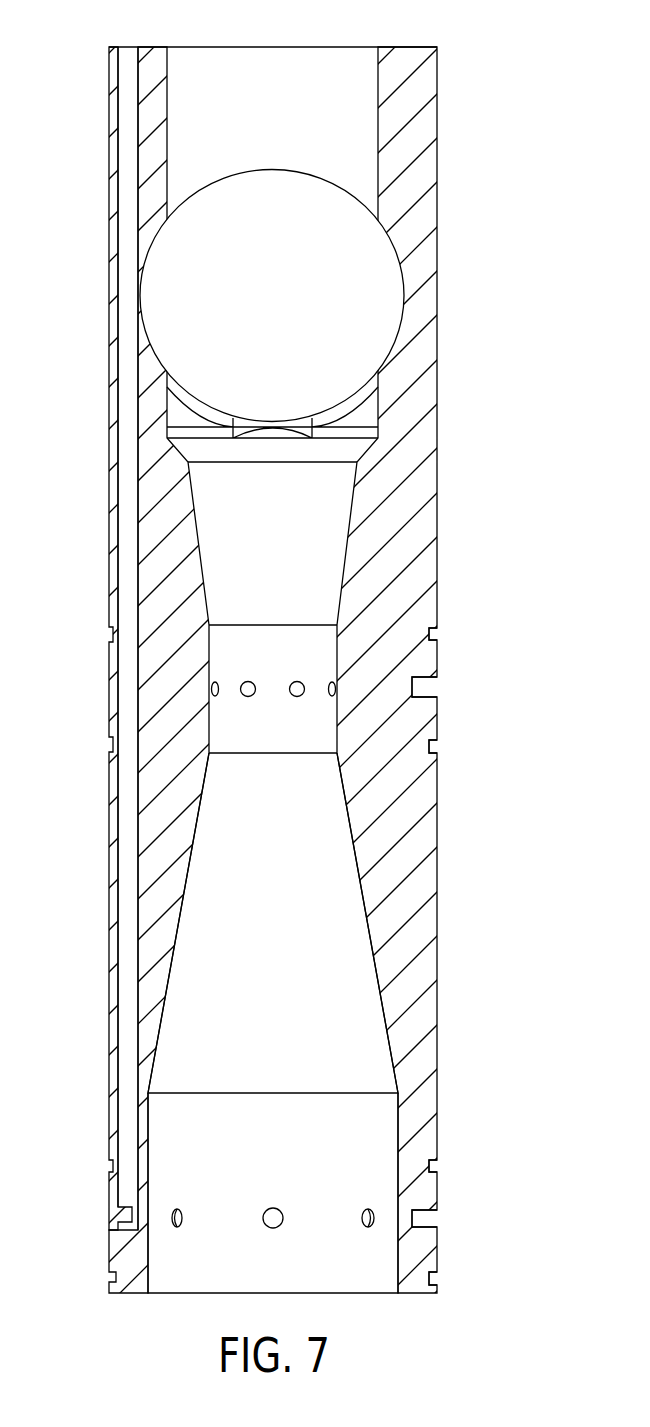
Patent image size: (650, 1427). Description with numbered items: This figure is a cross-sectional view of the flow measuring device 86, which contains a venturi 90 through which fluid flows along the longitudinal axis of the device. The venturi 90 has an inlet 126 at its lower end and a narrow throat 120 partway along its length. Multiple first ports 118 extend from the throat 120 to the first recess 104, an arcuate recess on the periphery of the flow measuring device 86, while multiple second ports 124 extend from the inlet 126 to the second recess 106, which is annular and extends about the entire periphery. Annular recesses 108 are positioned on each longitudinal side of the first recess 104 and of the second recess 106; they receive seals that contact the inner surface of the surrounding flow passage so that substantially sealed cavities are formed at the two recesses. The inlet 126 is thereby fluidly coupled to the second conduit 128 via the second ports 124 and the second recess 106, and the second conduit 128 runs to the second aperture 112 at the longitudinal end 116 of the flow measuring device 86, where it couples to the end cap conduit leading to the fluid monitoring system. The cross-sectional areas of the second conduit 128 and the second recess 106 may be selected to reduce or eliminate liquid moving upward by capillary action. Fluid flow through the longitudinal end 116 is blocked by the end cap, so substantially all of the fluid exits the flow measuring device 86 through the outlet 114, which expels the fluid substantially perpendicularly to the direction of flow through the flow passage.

The flow measuring device 86 is at (430, 438).
The venturi 90 is at (298, 837).
The first recess 104 is at (424, 678).
The second recess 106 is at (430, 1211).
The annular recesses 108 is at (430, 1274).
The second aperture 112 is at (129, 47).
The outlet 114 is at (401, 323).
The longitudinal end 116 is at (298, 32).
The first ports 118 is at (212, 688).
The throat 120 is at (256, 648).
The second ports 124 is at (360, 1216).
The inlet 126 is at (208, 1240).
The second conduit 128 is at (116, 1113).